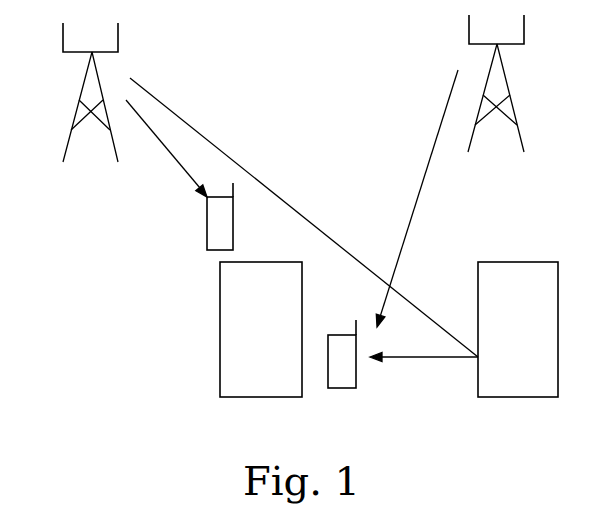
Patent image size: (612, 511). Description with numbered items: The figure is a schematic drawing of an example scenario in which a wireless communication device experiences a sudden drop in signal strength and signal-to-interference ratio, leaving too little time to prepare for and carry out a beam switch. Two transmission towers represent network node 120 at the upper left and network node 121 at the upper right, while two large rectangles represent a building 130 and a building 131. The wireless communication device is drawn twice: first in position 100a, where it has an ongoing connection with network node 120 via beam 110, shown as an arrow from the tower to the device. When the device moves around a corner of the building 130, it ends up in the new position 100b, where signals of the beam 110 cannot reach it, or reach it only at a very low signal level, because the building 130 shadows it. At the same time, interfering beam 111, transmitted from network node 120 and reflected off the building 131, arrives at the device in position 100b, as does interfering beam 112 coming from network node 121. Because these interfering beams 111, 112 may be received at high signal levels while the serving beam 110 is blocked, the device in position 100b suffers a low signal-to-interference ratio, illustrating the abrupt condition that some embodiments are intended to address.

The network node 120 is at (77, 113).
The network node 121 is at (512, 107).
The beam 110 is at (173, 162).
The interfering beam 111 is at (280, 197).
The interfering beam 112 is at (415, 178).
The position 100a is at (203, 242).
The position 100b is at (357, 383).
The building 130 is at (261, 329).
The building 131 is at (464, 329).